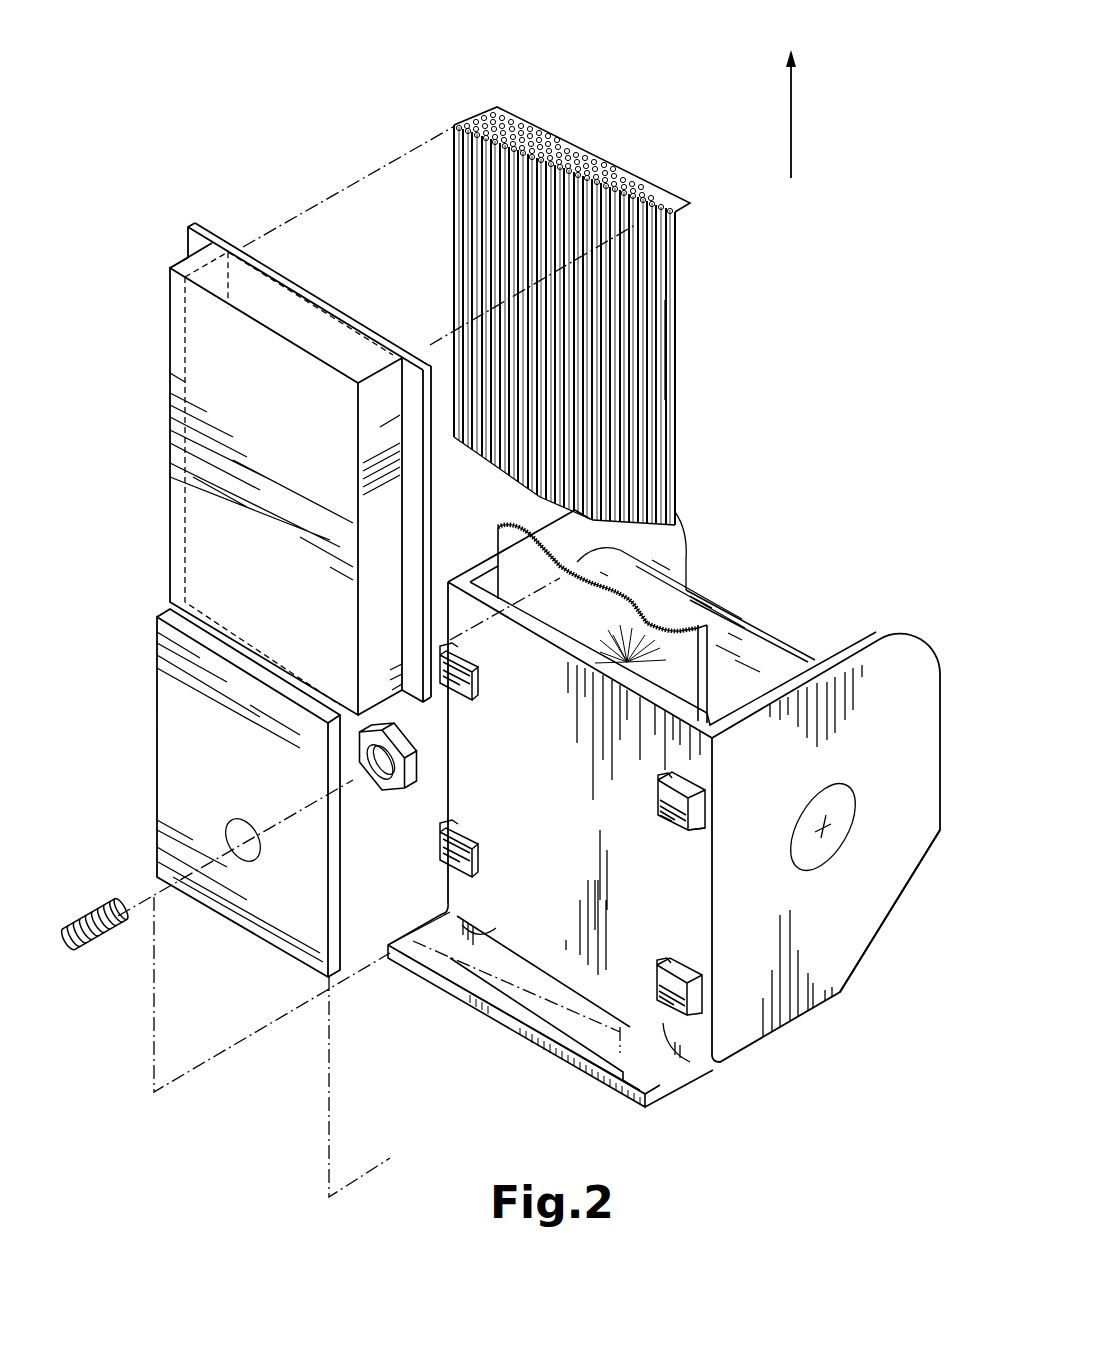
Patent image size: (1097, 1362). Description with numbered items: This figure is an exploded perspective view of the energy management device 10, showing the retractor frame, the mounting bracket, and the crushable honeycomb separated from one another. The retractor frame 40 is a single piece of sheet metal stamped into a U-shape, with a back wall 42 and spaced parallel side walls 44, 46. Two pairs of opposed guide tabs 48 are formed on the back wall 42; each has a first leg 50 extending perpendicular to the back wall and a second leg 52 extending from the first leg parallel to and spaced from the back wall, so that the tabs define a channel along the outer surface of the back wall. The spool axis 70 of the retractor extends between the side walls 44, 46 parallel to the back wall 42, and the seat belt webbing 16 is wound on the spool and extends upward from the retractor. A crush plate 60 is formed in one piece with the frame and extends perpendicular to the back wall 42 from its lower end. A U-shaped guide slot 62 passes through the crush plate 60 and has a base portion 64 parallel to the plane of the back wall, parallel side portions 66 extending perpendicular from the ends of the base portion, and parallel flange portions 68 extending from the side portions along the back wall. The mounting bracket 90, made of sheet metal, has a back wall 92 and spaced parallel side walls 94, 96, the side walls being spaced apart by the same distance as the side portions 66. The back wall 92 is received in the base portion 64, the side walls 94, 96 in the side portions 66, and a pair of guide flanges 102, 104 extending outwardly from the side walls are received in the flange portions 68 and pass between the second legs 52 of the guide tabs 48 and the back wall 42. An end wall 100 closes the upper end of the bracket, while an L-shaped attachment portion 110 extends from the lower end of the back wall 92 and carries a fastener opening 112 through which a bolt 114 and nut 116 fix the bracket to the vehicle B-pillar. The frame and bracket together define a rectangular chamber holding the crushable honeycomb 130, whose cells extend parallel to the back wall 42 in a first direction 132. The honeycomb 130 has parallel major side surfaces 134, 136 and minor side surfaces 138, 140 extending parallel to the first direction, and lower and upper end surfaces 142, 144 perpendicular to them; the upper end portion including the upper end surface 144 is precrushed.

The energy management device 10 is at (830, 360).
The seat belt webbing 16 is at (706, 640).
The frame 40 is at (907, 628).
The back wall 42 is at (690, 928).
The side wall 44 is at (897, 902).
The side wall 46 is at (685, 548).
The guide tabs 48 is at (478, 690).
The first leg 50 is at (697, 832).
The second leg 52 is at (668, 818).
The crush plate 60 is at (672, 1122).
The guide slot 62 is at (472, 1000).
The base portion 64 is at (543, 1027).
The side portions 66 is at (407, 962).
The flange portions 68 is at (478, 920).
The spool axis 70 is at (825, 828).
The mounting bracket 90 is at (146, 566).
The back wall 92 is at (225, 533).
The side wall 94 is at (382, 548).
The side wall 96 is at (178, 262).
The end wall 100 is at (315, 326).
The guide flange 102 is at (428, 356).
The guide flange 104 is at (200, 226).
The attachment portion 110 is at (182, 718).
The fastener opening 112 is at (229, 830).
The bolt 114 is at (110, 895).
The nut 116 is at (356, 757).
The honeycomb 130 is at (441, 80).
The first direction 132 is at (791, 127).
The major side surface 134 is at (512, 262).
The major side surface 136 is at (676, 283).
The minor side surface 138 is at (473, 112).
The minor side surface 140 is at (666, 378).
The lower end surface 142 is at (527, 482).
The upper end surface 144 is at (590, 180).